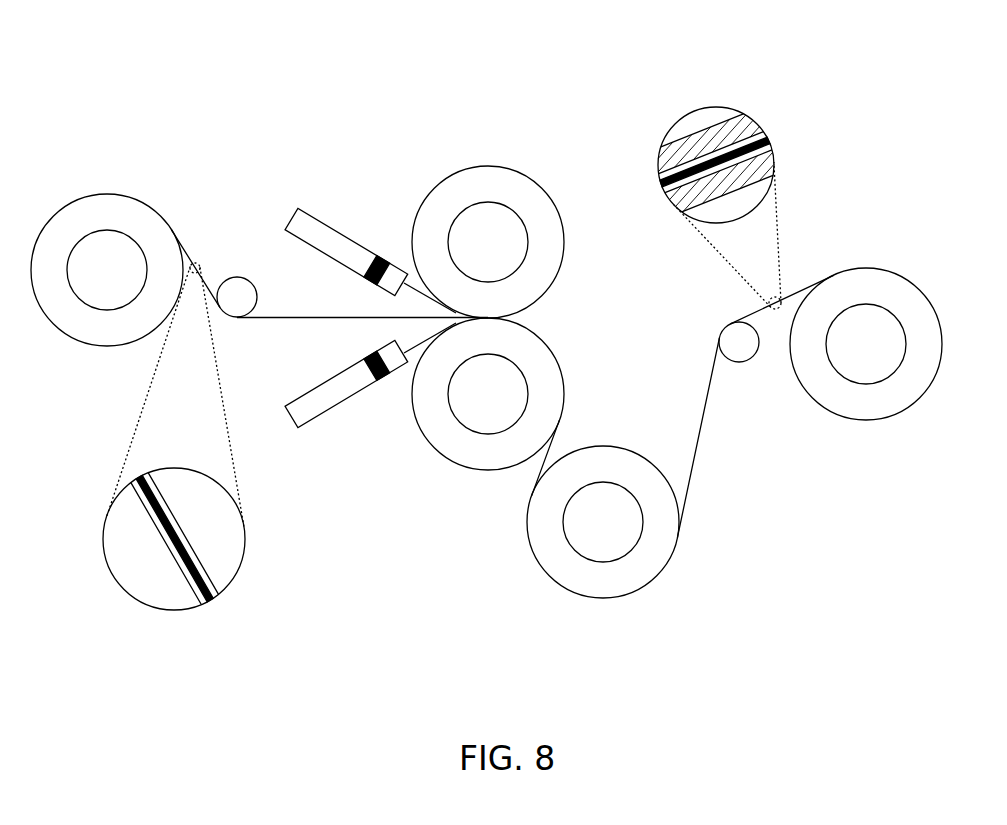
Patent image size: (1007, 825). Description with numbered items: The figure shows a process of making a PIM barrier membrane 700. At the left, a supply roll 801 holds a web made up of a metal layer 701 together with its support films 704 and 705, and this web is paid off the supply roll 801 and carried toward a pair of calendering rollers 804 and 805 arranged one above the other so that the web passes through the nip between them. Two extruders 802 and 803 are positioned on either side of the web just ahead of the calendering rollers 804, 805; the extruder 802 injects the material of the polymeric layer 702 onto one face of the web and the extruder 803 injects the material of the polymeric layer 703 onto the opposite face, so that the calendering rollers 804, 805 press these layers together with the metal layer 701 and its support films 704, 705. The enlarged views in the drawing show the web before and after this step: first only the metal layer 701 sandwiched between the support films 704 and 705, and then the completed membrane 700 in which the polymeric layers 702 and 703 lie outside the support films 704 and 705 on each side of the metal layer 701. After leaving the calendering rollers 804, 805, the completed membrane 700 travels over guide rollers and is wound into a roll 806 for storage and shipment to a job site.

The membrane 700 is at (697, 452).
The metal layer 701 is at (765, 142).
The polymeric layer 702 is at (750, 125).
The polymeric layer 703 is at (765, 163).
The support film 704 is at (763, 130).
The support film 705 is at (768, 147).
The supply roll 801 is at (105, 210).
The extruder 802 is at (325, 235).
The extruder 803 is at (327, 395).
The calendering roller 804 is at (502, 182).
The calendering roller 805 is at (480, 457).
The roll 806 is at (893, 407).